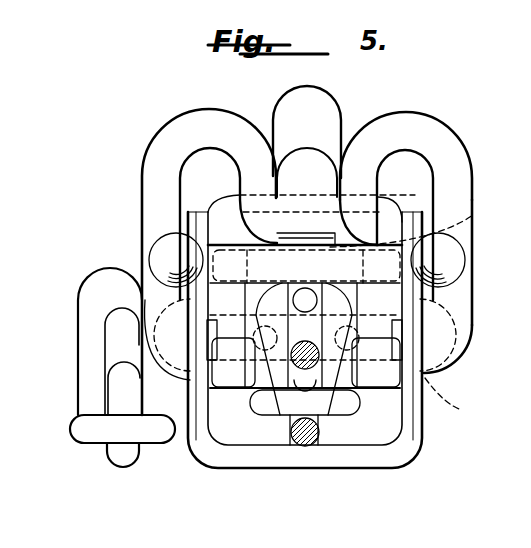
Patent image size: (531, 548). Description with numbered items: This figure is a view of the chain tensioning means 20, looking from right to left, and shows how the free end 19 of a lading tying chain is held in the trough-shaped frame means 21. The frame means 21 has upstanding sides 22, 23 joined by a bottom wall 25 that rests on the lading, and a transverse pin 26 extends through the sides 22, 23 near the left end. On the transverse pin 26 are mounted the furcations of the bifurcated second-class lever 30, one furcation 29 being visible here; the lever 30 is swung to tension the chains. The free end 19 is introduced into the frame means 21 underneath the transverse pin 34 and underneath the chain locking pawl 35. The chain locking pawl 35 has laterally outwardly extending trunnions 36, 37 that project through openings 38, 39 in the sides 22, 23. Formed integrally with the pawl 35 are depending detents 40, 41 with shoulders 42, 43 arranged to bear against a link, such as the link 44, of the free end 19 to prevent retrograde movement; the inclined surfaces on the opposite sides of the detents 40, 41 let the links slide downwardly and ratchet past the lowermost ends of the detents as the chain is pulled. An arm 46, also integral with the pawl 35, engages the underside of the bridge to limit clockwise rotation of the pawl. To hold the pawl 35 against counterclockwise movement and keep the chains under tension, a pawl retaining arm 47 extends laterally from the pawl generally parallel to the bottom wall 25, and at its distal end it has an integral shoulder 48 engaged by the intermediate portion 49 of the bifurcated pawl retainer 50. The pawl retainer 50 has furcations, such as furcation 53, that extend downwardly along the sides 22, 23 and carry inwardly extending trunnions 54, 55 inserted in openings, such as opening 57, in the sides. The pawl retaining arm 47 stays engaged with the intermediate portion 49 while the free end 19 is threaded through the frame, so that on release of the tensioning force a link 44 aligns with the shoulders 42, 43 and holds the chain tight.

The free end 19 is at (11, 205).
The chain tensioning means 20 is at (450, 109).
The frame means 21 is at (433, 420).
The upstanding side 22 is at (422, 385).
The upstanding side 23 is at (192, 413).
The bottom wall 25 is at (292, 468).
The transverse pin 26 is at (455, 400).
The furcation 29 is at (196, 409).
The second-class lever 30 is at (351, 96).
The transverse pin 34 is at (403, 217).
The chain locking pawl 35 is at (246, 401).
The trunnion 36 is at (455, 318).
The trunnion 37 is at (176, 277).
The opening 38 is at (410, 253).
The opening 39 is at (170, 253).
The detent 40 is at (305, 364).
The detent 41 is at (305, 364).
The shoulder 42 is at (304, 371).
The shoulder 43 is at (359, 392).
The link 44 is at (386, 199).
The arm 46 is at (353, 203).
The pawl retaining arm 47 is at (470, 217).
The shoulder 48 is at (281, 243).
The intermediate portion 49 is at (311, 213).
The pawl retainer 50 is at (478, 148).
The furcation 53 is at (145, 193).
The trunnion 54 is at (458, 345).
The trunnion 55 is at (170, 343).
The opening 57 is at (458, 283).